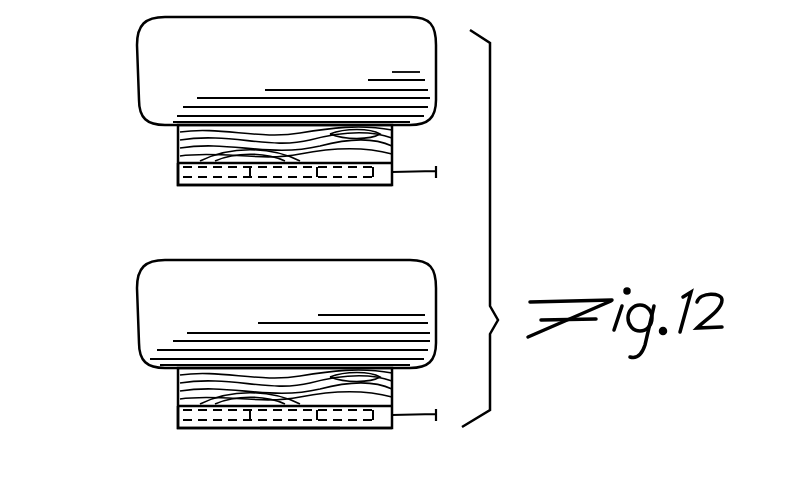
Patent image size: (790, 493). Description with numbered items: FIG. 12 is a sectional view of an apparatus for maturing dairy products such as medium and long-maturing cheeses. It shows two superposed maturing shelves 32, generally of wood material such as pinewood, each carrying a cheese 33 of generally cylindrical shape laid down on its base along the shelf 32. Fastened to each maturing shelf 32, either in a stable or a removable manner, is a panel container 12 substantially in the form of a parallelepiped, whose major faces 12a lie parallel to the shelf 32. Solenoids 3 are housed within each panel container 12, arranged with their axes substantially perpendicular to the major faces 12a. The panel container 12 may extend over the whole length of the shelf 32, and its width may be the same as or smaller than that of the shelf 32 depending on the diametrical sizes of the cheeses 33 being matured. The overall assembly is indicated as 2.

The heating pad assembly 2 is at (253, 251).
The solenoid 3 is at (177, 170).
The panel container 12 is at (194, 187).
The major face 12a is at (312, 187).
The maturing shelf 32 is at (393, 137).
The cheese 33 is at (433, 46).